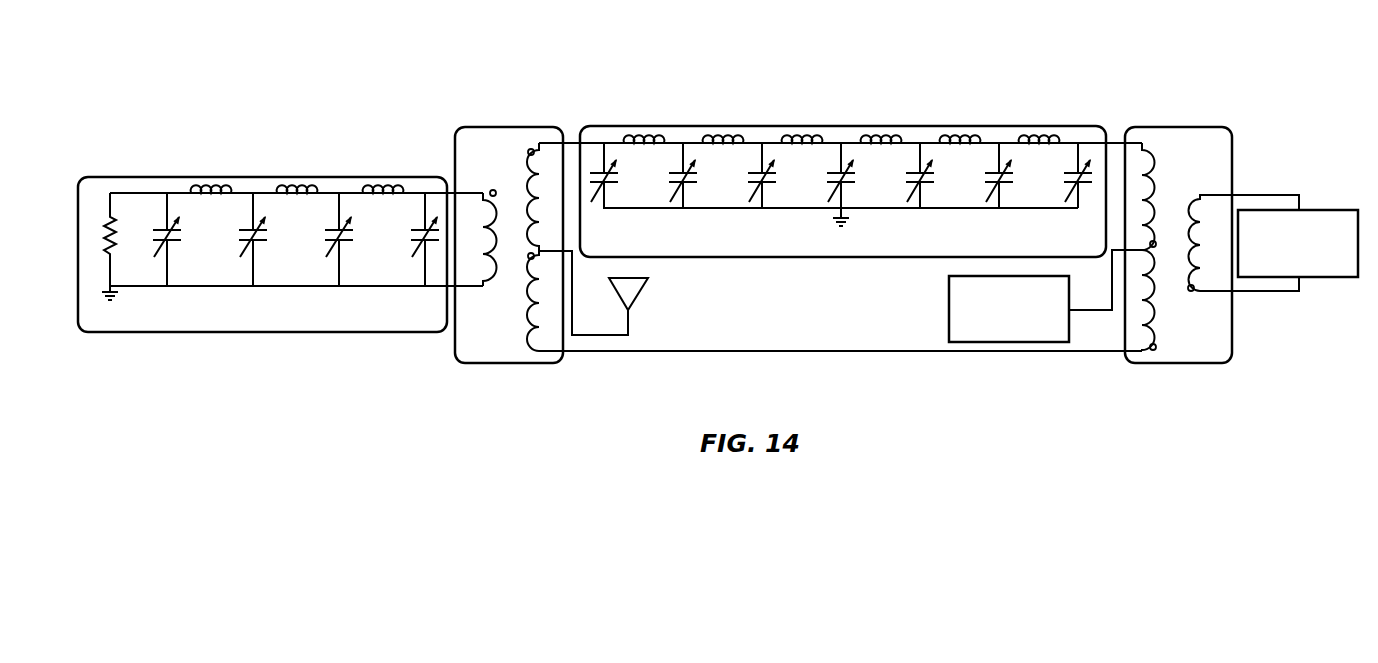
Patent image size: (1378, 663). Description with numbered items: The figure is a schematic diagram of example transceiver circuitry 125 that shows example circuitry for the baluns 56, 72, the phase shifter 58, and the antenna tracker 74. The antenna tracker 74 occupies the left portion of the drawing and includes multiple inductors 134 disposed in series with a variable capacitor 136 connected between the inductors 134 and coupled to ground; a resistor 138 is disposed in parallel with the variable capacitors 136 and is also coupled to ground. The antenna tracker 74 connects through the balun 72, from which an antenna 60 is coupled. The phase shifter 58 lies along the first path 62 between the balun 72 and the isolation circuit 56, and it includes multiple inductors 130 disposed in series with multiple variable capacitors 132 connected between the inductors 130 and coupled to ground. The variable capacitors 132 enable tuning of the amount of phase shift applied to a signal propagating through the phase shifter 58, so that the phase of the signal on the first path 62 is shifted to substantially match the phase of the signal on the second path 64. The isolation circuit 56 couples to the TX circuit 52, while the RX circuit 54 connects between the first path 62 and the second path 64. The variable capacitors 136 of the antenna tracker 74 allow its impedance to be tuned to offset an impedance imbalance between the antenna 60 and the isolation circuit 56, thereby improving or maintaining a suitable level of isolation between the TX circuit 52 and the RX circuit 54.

The transceiver circuitry 125 is at (1304, 73).
The antenna tracker 74 is at (270, 177).
The resistor 138 is at (117, 232).
The variable capacitor 136 is at (174, 243).
The inductor 134 is at (382, 190).
The balun 72 is at (508, 127).
The second path 64 is at (842, 351).
The antenna 60 is at (640, 293).
The phase shifter 58 is at (843, 127).
The variable capacitor 132 is at (595, 172).
The inductor 130 is at (647, 142).
The isolation circuit 56 is at (1178, 127).
The first path 62 is at (1115, 142).
The TX circuit 52 is at (1323, 210).
The RX circuit 54 is at (949, 308).